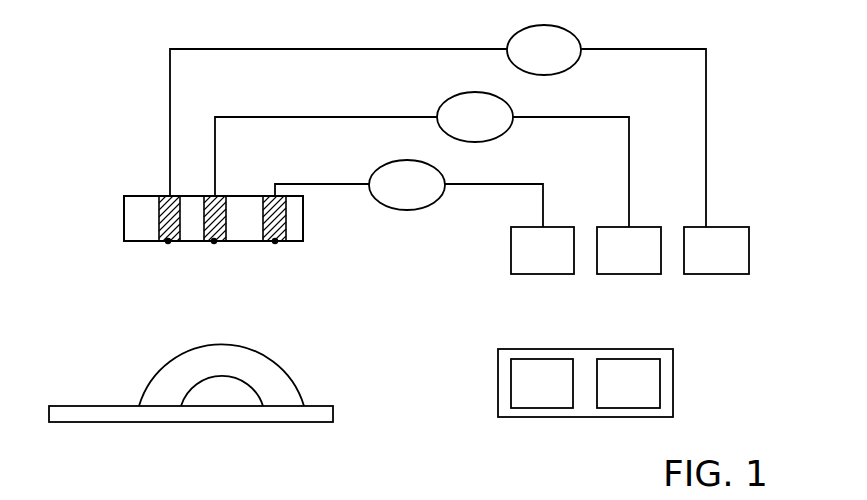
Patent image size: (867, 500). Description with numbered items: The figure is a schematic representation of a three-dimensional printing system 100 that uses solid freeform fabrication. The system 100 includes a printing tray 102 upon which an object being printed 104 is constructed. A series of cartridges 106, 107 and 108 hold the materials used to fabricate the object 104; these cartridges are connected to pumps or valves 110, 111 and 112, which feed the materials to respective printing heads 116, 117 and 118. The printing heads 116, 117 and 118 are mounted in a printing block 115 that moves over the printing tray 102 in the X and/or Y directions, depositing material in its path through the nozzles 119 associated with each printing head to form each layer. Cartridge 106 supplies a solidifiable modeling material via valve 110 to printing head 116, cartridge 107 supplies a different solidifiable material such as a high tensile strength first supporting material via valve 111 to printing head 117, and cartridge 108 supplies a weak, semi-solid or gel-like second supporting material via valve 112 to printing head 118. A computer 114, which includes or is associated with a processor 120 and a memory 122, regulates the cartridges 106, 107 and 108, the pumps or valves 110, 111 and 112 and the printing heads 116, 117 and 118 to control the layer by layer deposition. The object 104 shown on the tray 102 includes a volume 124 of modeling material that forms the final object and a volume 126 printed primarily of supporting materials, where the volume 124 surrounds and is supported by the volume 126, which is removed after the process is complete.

The system 100 is at (105, 78).
The printing tray 102 is at (334, 416).
The object being printed 104 is at (250, 344).
The cartridge 106 is at (542, 250).
The cartridge 107 is at (629, 250).
The cartridge 108 is at (716, 250).
The pump or valve 110 is at (409, 193).
The pump or valve 111 is at (422, 159).
The pump or valve 112 is at (438, 126).
The computer 114 is at (674, 380).
The printing block 115 is at (124, 218).
The printing head 116 is at (286, 216).
The printing head 117 is at (238, 197).
The printing head 118 is at (159, 206).
The nozzles 119 is at (214, 243).
The processor 120 is at (542, 383).
The memory 122 is at (628, 383).
The volume of modeling material 124 is at (165, 374).
The volume of supporting material 126 is at (193, 398).